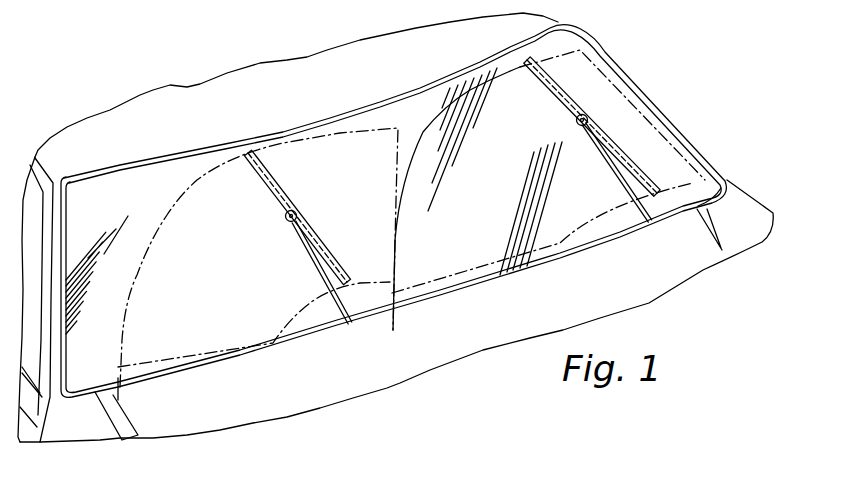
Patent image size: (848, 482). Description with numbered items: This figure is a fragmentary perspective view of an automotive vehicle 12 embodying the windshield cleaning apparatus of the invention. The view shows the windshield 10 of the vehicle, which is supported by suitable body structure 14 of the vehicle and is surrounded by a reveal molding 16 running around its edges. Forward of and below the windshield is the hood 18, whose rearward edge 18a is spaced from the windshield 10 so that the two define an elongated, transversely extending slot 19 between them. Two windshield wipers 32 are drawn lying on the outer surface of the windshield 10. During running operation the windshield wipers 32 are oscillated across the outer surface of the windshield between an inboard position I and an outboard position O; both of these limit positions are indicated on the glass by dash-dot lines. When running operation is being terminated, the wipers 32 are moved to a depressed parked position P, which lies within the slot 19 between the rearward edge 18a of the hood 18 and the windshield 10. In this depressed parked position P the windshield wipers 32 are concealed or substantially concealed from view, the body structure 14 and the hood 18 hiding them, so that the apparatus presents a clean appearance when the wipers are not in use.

The windshield 10 is at (580, 42).
The automotive vehicle 12 is at (391, 50).
The body structure 14 is at (746, 223).
The reveal molding 16 is at (64, 217).
The hood 18 is at (633, 283).
The rearward edge 18a is at (310, 330).
The slot 19 is at (711, 178).
The windshield wipers 32 is at (289, 212).
The outboard position O is at (397, 145).
The inboard position I is at (183, 352).
The depressed parked position P is at (130, 381).